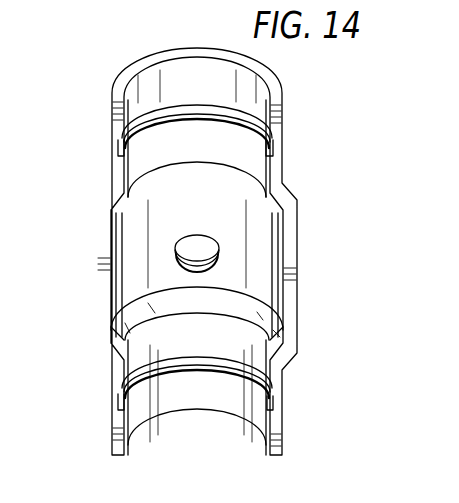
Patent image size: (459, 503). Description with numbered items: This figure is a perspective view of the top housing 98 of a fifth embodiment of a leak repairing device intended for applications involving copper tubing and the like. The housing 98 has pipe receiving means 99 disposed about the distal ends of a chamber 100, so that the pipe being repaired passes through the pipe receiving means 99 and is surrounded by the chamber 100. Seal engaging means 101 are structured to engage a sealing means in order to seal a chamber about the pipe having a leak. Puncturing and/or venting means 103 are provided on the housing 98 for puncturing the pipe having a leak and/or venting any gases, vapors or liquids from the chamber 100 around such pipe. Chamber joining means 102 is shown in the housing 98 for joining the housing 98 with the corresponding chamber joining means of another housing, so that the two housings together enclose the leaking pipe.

The housing 98 is at (80, 437).
The pipe receiving means 99 is at (232, 83).
The chamber 100 is at (268, 250).
The seal engaging means 101 is at (257, 121).
The chamber joining means 102 is at (290, 315).
The puncturing and/or venting means 103 is at (190, 258).